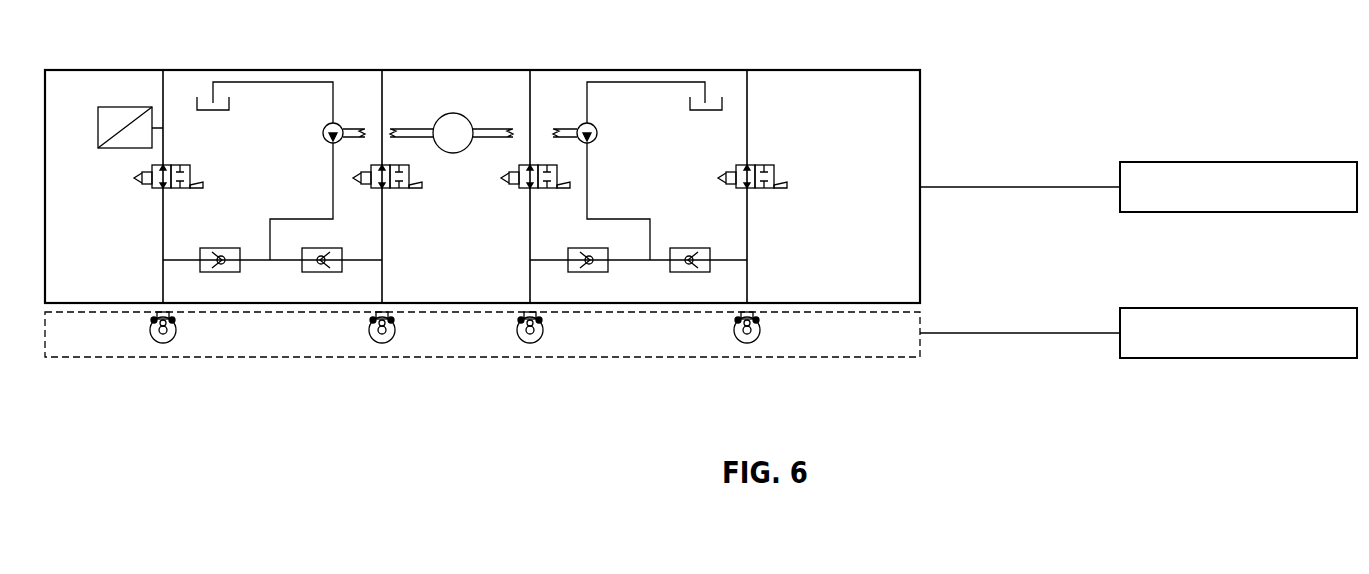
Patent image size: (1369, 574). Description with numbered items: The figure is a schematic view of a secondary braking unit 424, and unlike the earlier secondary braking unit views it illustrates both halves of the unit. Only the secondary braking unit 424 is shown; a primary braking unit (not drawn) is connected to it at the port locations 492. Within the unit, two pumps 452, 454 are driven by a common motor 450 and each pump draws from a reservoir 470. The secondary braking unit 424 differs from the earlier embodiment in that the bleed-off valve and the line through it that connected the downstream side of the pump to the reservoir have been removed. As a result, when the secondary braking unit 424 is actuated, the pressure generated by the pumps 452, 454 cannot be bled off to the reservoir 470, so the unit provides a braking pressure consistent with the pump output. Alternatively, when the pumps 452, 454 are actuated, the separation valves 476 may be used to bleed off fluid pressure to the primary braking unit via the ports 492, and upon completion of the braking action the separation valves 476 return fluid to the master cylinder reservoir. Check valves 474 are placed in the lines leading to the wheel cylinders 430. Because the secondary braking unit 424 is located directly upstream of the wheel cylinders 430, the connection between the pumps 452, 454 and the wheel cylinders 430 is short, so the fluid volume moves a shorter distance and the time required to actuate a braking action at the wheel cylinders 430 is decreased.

The secondary braking unit 424 is at (920, 135).
The port locations 492 is at (163, 70).
The reservoir 470 is at (213, 112).
The pump 452 is at (323, 133).
The pump 454 is at (598, 132).
The motor 450 is at (453, 113).
The separation valves 476 is at (178, 188).
The check valve 474 is at (220, 272).
The wheel cylinders 430 is at (171, 315).